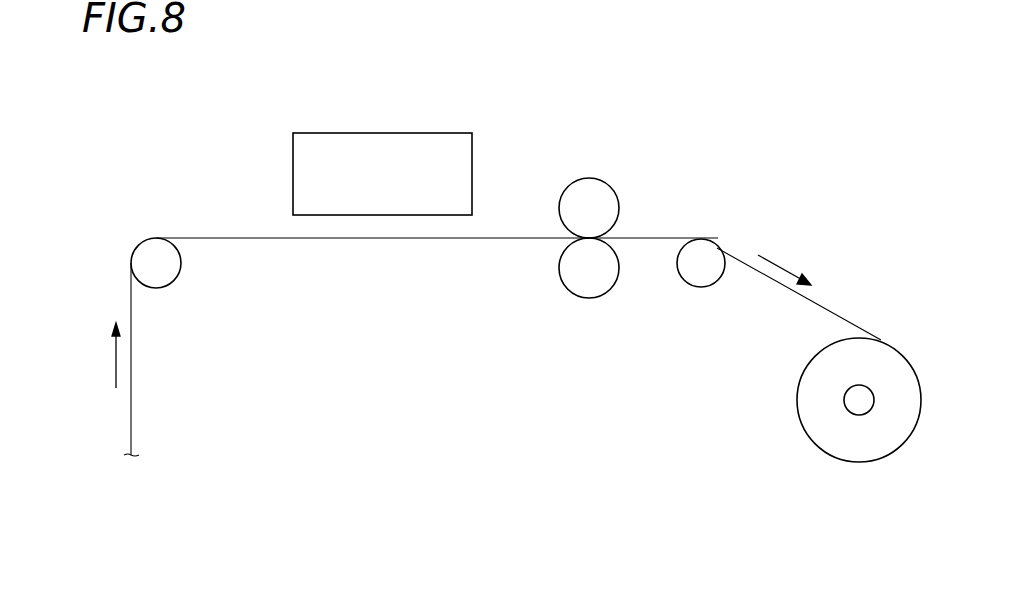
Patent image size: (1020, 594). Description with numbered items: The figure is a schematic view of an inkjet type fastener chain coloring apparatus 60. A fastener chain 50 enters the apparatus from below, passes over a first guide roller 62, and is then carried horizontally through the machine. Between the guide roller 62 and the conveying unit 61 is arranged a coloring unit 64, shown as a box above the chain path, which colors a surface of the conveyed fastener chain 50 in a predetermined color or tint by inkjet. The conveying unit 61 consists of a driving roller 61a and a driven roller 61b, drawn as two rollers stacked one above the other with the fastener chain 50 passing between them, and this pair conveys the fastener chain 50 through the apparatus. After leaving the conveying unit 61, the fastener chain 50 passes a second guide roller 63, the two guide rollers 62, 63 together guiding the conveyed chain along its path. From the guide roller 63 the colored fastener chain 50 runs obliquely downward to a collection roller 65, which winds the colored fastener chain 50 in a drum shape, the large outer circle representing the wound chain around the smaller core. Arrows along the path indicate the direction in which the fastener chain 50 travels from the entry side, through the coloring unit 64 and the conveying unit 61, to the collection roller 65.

The fastener chain 50 is at (216, 237).
The fastener chain coloring apparatus 60 is at (247, 164).
The conveying unit 61 is at (623, 230).
The driving roller 61a is at (607, 206).
The driven roller 61b is at (590, 287).
The guide roller 62 is at (155, 256).
The guide roller 63 is at (699, 250).
The coloring unit 64 is at (378, 148).
The collection roller 65 is at (858, 447).